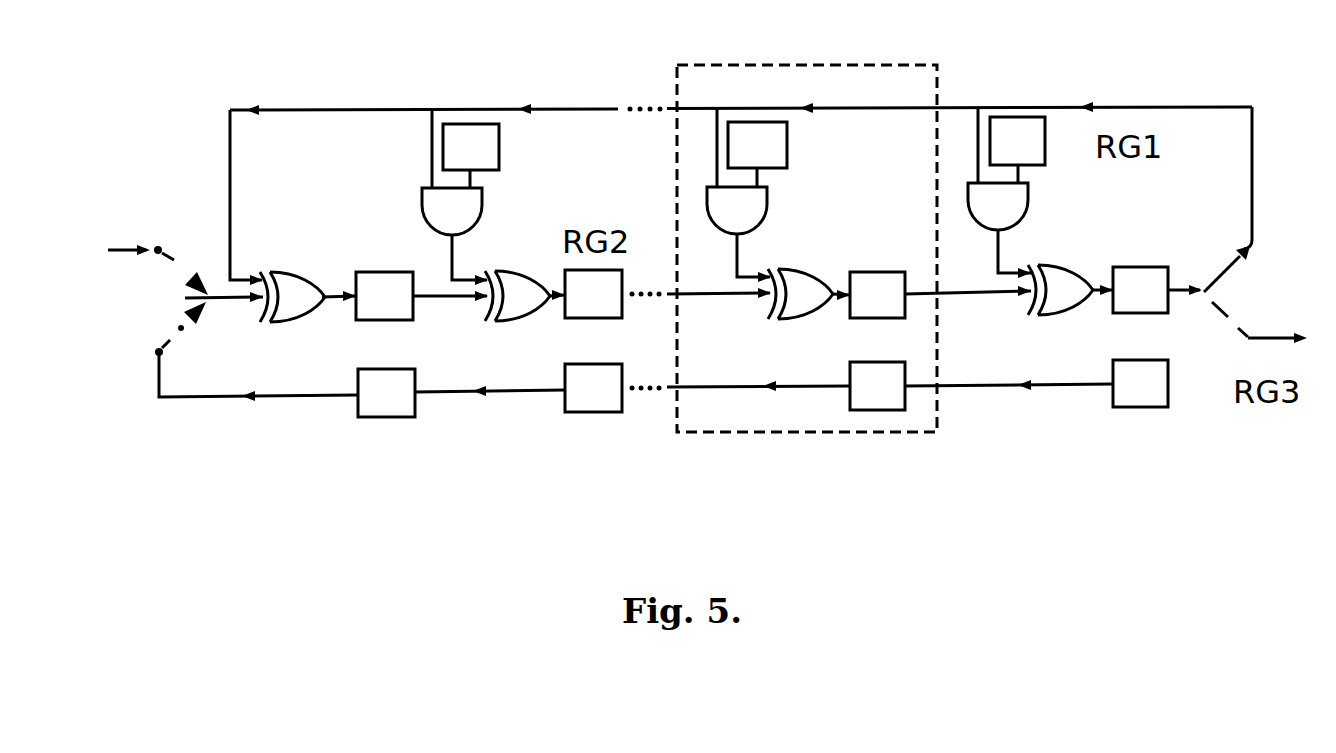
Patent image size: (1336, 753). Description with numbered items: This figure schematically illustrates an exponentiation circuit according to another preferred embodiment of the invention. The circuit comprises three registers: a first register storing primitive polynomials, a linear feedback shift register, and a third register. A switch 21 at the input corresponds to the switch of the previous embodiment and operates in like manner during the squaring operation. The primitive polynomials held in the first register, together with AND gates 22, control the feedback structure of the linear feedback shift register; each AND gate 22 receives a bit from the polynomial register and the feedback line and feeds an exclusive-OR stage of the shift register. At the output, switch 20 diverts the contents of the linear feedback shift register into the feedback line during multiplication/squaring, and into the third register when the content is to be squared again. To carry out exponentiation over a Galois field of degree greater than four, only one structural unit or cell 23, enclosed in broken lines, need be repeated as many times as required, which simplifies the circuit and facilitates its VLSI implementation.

The switch 20 is at (1223, 289).
The switch 21 is at (185, 299).
The AND gates 22 is at (992, 193).
The structural unit or cell 23 is at (870, 82).